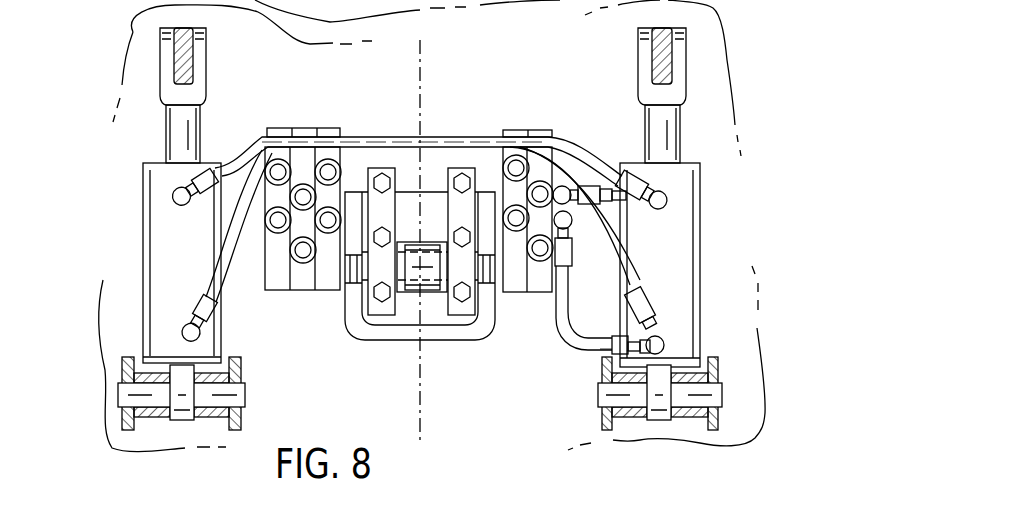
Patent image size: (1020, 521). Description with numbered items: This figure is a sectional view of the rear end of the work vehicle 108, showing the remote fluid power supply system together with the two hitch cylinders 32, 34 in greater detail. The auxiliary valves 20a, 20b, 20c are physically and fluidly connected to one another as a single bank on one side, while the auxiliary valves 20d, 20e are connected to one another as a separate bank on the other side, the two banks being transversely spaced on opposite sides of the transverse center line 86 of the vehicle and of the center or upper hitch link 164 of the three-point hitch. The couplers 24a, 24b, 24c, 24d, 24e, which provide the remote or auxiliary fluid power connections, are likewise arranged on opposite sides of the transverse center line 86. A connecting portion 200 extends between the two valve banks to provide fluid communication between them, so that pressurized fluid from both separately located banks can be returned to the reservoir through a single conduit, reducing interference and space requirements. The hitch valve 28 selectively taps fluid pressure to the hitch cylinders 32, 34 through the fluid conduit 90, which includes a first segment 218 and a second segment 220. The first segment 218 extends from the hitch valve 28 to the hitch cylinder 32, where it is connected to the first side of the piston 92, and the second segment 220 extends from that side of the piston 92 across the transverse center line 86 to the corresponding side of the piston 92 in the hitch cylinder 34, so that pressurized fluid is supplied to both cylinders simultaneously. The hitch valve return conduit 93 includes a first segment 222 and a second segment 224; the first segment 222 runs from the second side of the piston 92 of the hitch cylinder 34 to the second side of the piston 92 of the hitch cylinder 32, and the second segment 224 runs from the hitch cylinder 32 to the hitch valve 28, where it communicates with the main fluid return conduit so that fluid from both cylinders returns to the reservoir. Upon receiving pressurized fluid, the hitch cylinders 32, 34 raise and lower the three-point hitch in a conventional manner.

The work vehicle 108 is at (113, 72).
The piston 92 is at (140, 140).
The hitch cylinder 34 is at (140, 262).
The hitch cylinder 32 is at (700, 265).
The transverse center line 86 is at (425, 84).
The hitch valve return conduit 93 is at (457, 136).
The first segment 222 is at (400, 135).
The second segment 224 is at (598, 190).
The second segment 220 is at (655, 290).
The first segment 218 is at (590, 357).
The hitch valve 28 is at (577, 235).
The fluid conduit 90 is at (548, 325).
The coupler 24a is at (266, 221).
The coupler 24b is at (298, 256).
The coupler 24c is at (362, 137).
The coupler 24d is at (493, 137).
The coupler 24e is at (548, 137).
The auxiliary valve 20a is at (278, 290).
The auxiliary valve 20b is at (303, 290).
The auxiliary valve 20c is at (328, 290).
The auxiliary valve 20d is at (510, 292).
The auxiliary valve 20e is at (540, 293).
The connecting portion 200 is at (386, 340).
The upper hitch link 164 is at (423, 240).